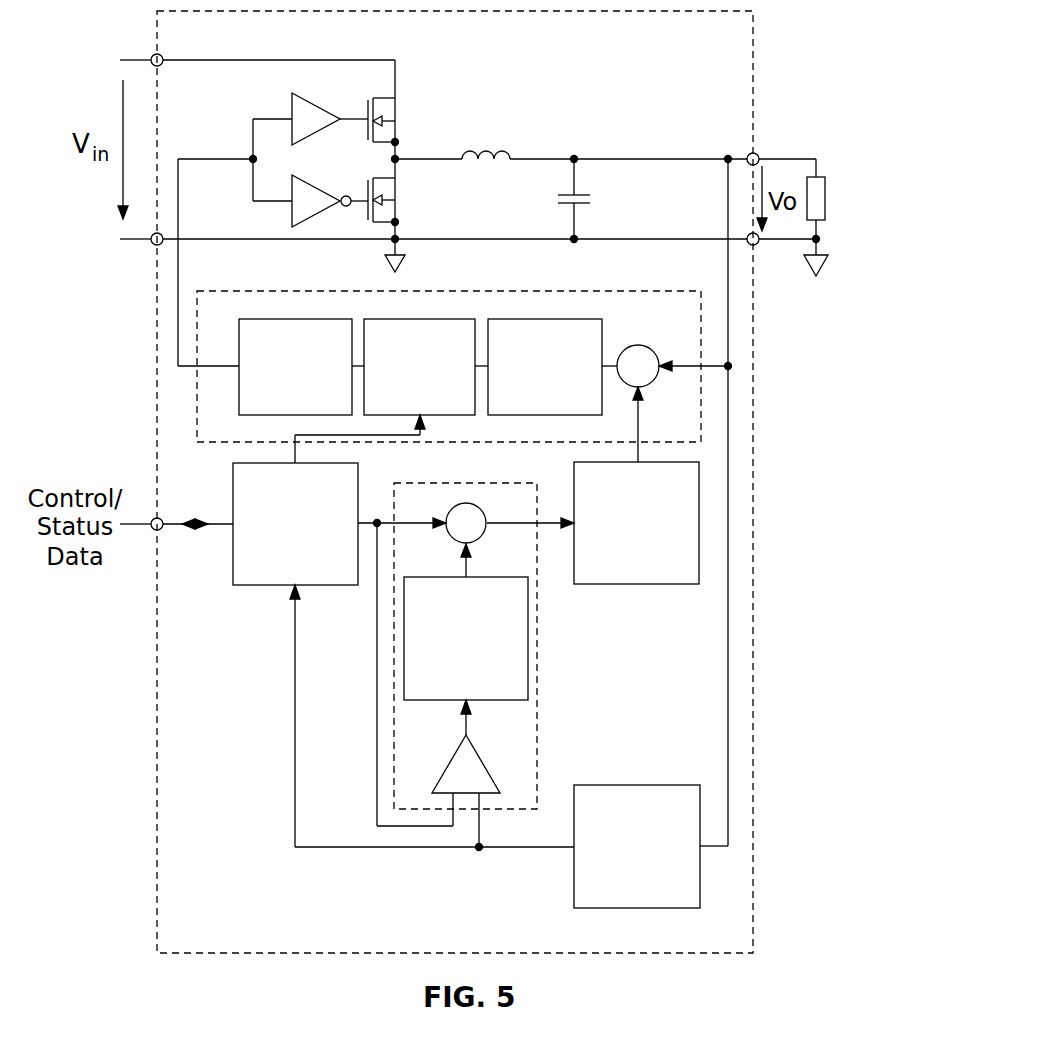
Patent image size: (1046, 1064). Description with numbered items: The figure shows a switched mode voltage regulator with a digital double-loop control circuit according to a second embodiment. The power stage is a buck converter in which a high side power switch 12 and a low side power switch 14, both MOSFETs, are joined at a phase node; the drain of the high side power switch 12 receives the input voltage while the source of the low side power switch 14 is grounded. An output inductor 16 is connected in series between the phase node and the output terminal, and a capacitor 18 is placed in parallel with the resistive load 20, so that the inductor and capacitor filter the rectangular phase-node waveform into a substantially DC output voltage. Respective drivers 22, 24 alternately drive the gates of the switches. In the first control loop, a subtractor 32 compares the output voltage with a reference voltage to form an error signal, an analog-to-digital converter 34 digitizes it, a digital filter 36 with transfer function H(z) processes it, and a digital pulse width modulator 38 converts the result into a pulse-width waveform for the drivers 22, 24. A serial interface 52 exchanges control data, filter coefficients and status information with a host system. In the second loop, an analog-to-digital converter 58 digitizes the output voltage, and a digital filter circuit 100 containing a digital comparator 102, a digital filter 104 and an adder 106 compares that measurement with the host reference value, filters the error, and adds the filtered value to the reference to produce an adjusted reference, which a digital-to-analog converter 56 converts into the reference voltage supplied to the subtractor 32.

The high side power switch 12 is at (397, 108).
The low side power switch 14 is at (397, 192).
The output inductor 16 is at (487, 143).
The capacitor 18 is at (592, 198).
The resistive load 20 is at (816, 177).
The driver 22 is at (303, 95).
The driver 24 is at (303, 175).
The subtractor 32 is at (640, 345).
The analog-to-digital converter 34 is at (546, 319).
The digital filter 36 is at (446, 319).
The digital pulse width modulator 38 is at (298, 319).
The serial interface 52 is at (233, 492).
The digital-to-analog converter 56 is at (628, 586).
The analog-to-digital converter 58 is at (626, 785).
The digital filter circuit 100 is at (465, 483).
The digital comparator 102 is at (440, 775).
The digital filter 104 is at (404, 640).
The adder 106 is at (468, 503).